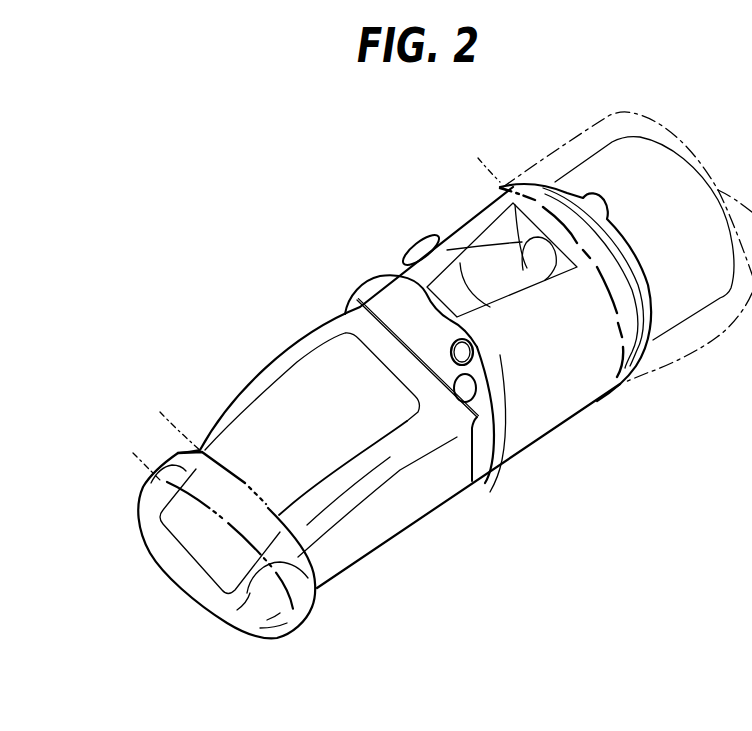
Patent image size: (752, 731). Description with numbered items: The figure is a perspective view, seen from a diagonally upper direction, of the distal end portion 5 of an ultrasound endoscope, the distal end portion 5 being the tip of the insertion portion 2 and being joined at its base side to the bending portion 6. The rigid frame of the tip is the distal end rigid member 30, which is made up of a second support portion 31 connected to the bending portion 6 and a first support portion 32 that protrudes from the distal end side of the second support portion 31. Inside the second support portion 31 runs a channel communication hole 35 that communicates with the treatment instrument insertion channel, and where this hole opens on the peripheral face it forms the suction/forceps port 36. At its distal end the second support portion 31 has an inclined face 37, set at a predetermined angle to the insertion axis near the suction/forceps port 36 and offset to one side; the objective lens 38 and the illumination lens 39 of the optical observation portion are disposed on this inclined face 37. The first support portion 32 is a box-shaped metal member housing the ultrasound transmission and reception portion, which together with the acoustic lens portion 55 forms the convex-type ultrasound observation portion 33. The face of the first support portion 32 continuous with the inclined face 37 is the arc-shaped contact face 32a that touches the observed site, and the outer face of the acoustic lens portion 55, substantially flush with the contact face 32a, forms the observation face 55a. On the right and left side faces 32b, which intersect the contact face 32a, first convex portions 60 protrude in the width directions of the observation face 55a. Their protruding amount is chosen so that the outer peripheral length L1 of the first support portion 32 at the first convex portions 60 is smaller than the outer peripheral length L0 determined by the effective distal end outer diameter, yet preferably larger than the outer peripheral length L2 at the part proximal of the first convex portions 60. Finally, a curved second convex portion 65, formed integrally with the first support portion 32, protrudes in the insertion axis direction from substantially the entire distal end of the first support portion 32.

The insertion portion 2 is at (375, 163).
The distal end portion 5 is at (272, 268).
The bending portion 6 is at (550, 145).
The distal end rigid member 30 is at (717, 457).
The second support portion 31 is at (681, 469).
The first support portion 32 is at (750, 390).
The contact face 32a is at (232, 407).
The side faces 32b is at (400, 503).
The convex-type ultrasound observation portion 33 is at (243, 347).
The channel communication hole 35 is at (487, 262).
The suction/forceps port 36 is at (420, 247).
The inclined face 37 is at (380, 292).
The objective lens 38 is at (466, 352).
The illumination lens 39 is at (468, 392).
The acoustic lens portion 55 is at (313, 370).
The observation face 55a is at (280, 403).
The first convex portions 60 is at (145, 485).
The second convex portion 65 is at (185, 573).
The outer peripheral length L0 is at (499, 164).
The outer peripheral length L1 is at (201, 529).
The outer peripheral length L2 is at (202, 446).